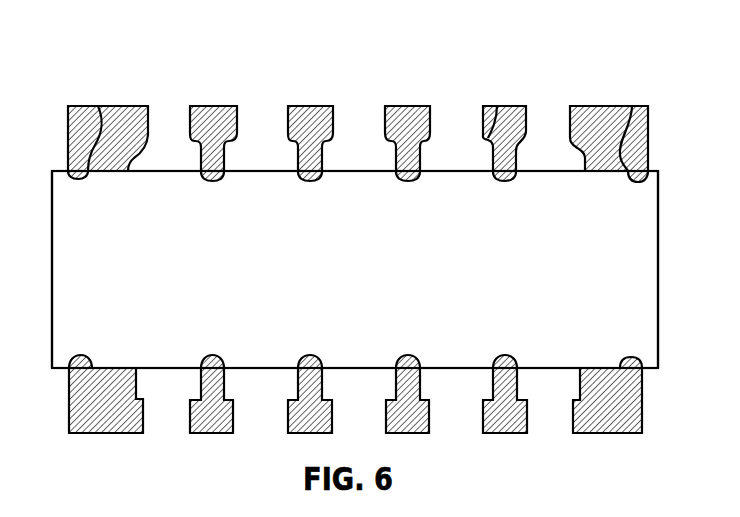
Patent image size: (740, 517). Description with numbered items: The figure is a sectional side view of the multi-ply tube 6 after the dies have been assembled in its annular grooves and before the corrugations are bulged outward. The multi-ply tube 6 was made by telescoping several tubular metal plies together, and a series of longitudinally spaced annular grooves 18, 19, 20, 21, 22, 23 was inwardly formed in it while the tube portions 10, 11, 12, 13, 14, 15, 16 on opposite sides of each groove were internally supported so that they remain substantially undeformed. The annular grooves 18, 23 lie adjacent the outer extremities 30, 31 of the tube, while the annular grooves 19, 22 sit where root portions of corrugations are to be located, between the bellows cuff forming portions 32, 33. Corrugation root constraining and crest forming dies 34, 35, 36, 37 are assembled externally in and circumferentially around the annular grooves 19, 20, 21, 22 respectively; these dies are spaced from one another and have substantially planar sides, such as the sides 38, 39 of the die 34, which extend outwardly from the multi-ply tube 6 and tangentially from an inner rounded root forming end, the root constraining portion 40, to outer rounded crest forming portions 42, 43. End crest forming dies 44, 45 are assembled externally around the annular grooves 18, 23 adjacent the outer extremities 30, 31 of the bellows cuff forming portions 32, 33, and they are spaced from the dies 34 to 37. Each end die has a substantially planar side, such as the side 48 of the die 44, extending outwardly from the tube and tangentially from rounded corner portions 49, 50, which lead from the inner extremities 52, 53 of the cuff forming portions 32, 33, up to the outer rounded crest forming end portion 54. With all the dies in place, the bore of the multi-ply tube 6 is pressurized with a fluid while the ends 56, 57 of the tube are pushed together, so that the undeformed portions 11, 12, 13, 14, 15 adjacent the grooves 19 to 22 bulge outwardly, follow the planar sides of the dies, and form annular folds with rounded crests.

The multi-ply tube 6 is at (551, 316).
The portion of the multi-ply tube 10 is at (658, 204).
The portion of the multi-ply tube 11 is at (545, 172).
The portion of the multi-ply tube 12 is at (448, 172).
The portion of the multi-ply tube 13 is at (365, 172).
The portion of the multi-ply tube 14 is at (267, 172).
The portion of the multi-ply tube 15 is at (177, 171).
The portion of the multi-ply tube 16 is at (63, 172).
The annular groove 18 is at (630, 183).
The annular groove 19 is at (503, 183).
The annular groove 20 is at (410, 182).
The annular groove 21 is at (310, 182).
The annular groove 22 is at (208, 182).
The annular groove 23 is at (87, 178).
The outer extremity of the multi-ply tube 30 is at (648, 137).
The outer extremity of the multi-ply tube 31 is at (98, 106).
The bellows cuff forming portion 32 is at (613, 177).
The bellows cuff forming portion 33 is at (125, 171).
The corrugation root constraining and crest forming die 34 is at (512, 106).
The corrugation root constraining and crest forming die 35 is at (407, 106).
The corrugation root constraining and crest forming die 36 is at (315, 106).
The corrugation root constraining and crest forming die 37 is at (217, 106).
The planar side of die 38 is at (526, 132).
The planar side of die 39 is at (493, 152).
The root constraining portion 40 is at (516, 168).
The crest forming portion 42 is at (520, 106).
The crest forming portion 43 is at (483, 106).
The end crest forming die 44 is at (637, 106).
The end crest forming die 45 is at (122, 106).
The planar side of end crest forming die 48 is at (632, 106).
The rounded corner portion 49 is at (578, 152).
The rounded corner portion 50 is at (129, 161).
The inner extremity of bellows cuff forming portion 52 is at (590, 173).
The inner extremity of bellows cuff forming portion 53 is at (132, 172).
The crest forming end portion 54 is at (572, 106).
The end of the multi-ply tube 56 is at (658, 323).
The end of the multi-ply tube 57 is at (52, 330).